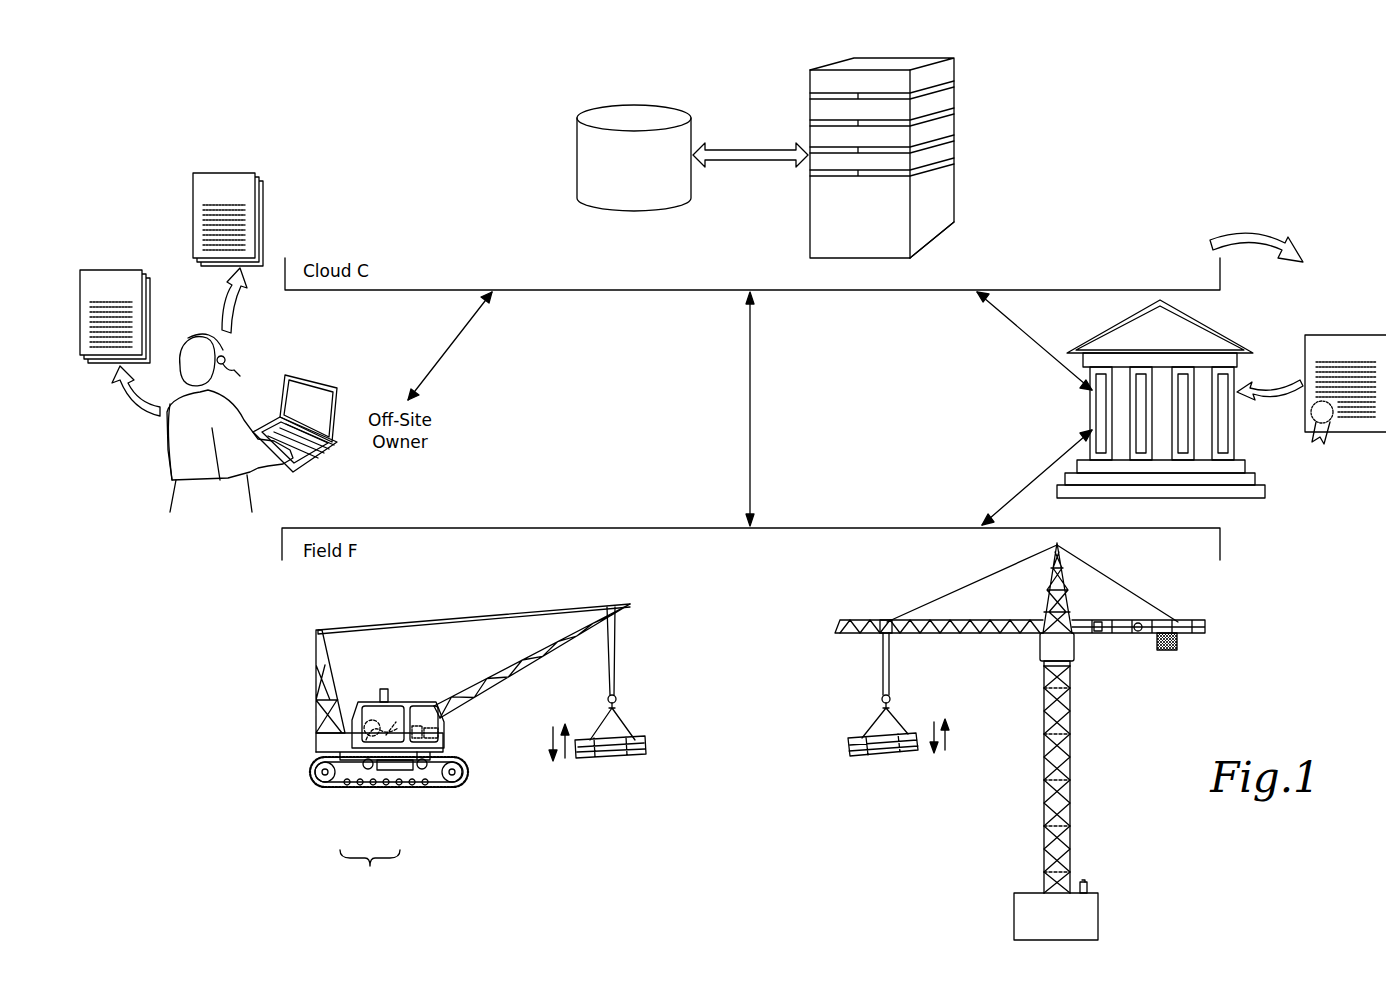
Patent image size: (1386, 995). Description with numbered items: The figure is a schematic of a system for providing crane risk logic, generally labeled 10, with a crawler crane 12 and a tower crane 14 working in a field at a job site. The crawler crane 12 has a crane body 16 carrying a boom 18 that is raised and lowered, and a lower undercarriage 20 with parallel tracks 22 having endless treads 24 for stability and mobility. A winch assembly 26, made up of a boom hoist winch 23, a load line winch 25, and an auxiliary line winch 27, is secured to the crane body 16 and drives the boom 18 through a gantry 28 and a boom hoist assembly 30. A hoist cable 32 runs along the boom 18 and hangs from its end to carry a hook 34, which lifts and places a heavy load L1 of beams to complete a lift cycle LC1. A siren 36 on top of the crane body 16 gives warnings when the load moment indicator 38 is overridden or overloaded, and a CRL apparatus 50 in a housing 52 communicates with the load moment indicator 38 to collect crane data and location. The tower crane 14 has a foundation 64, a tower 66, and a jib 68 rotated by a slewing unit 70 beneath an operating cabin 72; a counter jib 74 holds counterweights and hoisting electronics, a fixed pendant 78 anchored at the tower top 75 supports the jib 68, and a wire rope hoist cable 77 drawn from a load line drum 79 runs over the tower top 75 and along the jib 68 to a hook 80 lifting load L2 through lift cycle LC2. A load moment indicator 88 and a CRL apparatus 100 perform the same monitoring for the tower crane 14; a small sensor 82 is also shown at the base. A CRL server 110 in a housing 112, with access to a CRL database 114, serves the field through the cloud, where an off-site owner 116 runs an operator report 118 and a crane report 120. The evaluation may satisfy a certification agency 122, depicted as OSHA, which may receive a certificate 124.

The system for providing crane risk logic 10 is at (1115, 152).
The crawler crane 12 is at (452, 617).
The tower crane 14 is at (1072, 752).
The crane body 16 is at (445, 722).
The boom 18 is at (525, 663).
The lower undercarriage 20 is at (318, 790).
The parallel tracks 22 is at (337, 790).
The boom hoist winch 23 is at (397, 790).
The endless treads 24 is at (465, 790).
The load line winch 25 is at (378, 790).
The winch assembly 26 is at (370, 867).
The auxiliary line winch 27 is at (365, 790).
The gantry 28 is at (316, 666).
The boom hoist assembly 30 is at (398, 614).
The hoist cable 32 is at (620, 660).
The hook 34 is at (620, 710).
The siren 36 is at (383, 688).
The load moment indicator 38 is at (440, 733).
The CRL apparatus 50 is at (418, 790).
The housing 52 is at (417, 735).
The foundation 64 is at (1100, 918).
The tower 66 is at (1072, 810).
The jib 68 is at (983, 635).
The slewing unit 70 is at (1075, 635).
The operating cabin 72 is at (1073, 620).
The counter jib 74 is at (1182, 640).
The tower top 75 is at (1055, 545).
The wire rope hoist cable 77 is at (1000, 620).
The fixed pendant 78 is at (988, 576).
The load line drum 79 is at (1138, 638).
The hook 80 is at (893, 700).
The base sensor 82 is at (1086, 882).
The load moment indicator 88 is at (1043, 638).
The CRL apparatus 100 is at (1100, 620).
The CRL server 110 is at (955, 183).
The housing 112 is at (940, 238).
The CRL database 114 is at (577, 162).
The off-site owner 116 is at (305, 372).
The operator report 118 is at (112, 270).
The crane report 120 is at (228, 172).
The certification agency 122 is at (1090, 405).
The certificate 124 is at (1345, 335).
The load L1 is at (650, 745).
The load L2 is at (860, 736).
The lift cycle LC1 is at (550, 735).
The lift cycle LC2 is at (950, 740).